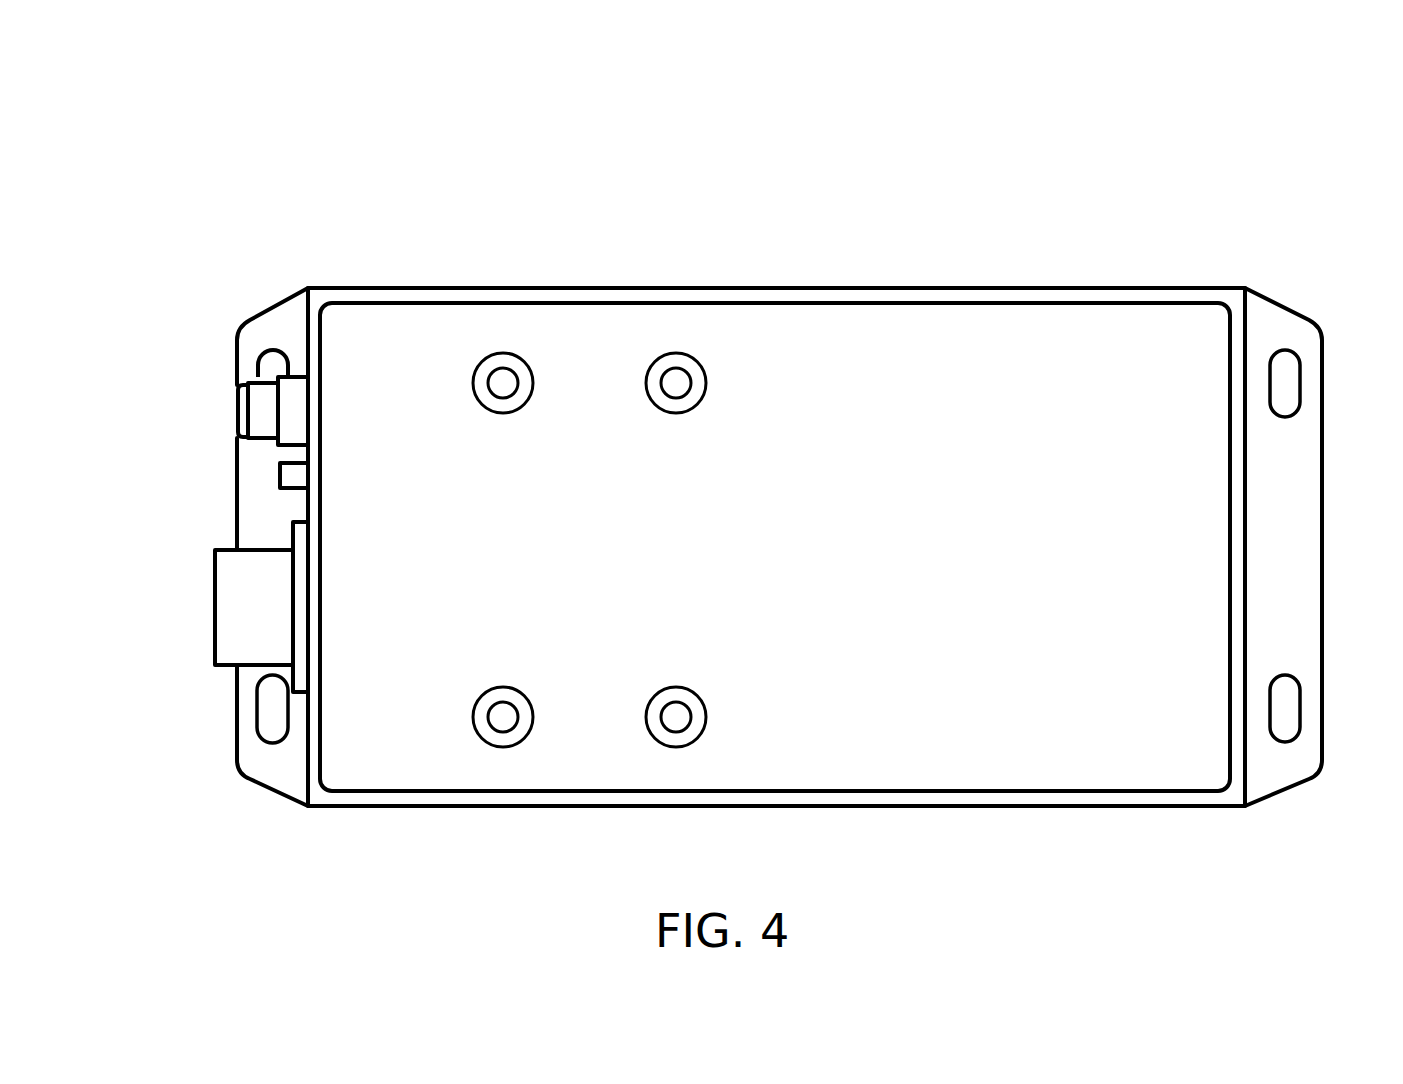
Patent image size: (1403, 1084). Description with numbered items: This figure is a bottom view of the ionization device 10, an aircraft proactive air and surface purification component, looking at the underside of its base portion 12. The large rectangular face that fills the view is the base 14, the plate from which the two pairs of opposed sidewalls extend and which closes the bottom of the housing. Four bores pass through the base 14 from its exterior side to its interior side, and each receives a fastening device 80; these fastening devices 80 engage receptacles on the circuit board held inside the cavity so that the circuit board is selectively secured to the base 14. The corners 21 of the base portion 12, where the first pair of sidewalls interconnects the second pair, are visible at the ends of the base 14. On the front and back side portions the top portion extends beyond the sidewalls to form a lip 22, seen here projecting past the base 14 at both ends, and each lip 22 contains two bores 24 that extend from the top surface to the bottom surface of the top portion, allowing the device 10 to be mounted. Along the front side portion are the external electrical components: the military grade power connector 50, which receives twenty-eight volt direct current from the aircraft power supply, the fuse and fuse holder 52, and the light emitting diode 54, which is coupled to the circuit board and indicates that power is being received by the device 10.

The ionization device 10 is at (754, 461).
The base portion 12 is at (818, 488).
The base 14 is at (761, 410).
The corners 21 is at (323, 295).
The lip 22 is at (1292, 537).
The bore 24 is at (1288, 388).
The power connector 50 is at (230, 628).
The fuse and fuse holder 52 is at (257, 410).
The light emitting diode 54 is at (282, 480).
The fastening device 80 is at (500, 352).